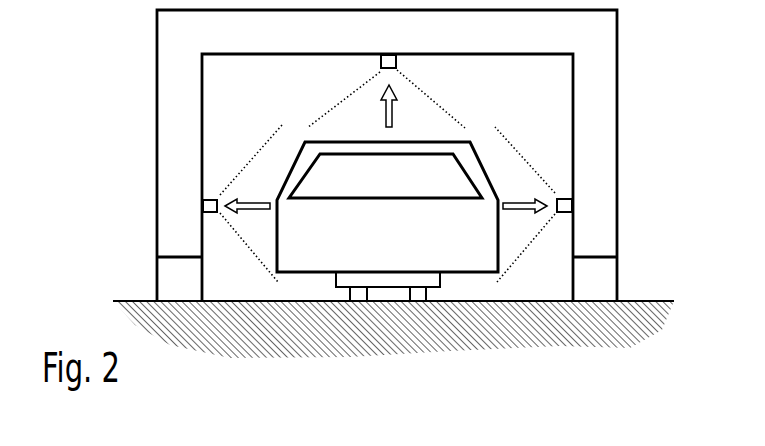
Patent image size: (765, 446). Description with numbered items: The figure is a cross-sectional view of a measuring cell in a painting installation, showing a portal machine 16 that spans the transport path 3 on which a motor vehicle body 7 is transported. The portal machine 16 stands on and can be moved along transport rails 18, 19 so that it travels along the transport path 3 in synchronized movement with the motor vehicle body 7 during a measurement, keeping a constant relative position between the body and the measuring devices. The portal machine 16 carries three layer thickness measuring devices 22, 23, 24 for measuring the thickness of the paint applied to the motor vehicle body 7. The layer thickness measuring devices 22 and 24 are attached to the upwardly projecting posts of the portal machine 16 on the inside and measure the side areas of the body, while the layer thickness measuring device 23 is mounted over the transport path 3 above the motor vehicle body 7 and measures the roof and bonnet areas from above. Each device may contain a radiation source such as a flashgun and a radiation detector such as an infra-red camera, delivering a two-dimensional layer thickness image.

The portal machine 16 is at (157, 67).
The transport rail 18 is at (157, 275).
The transport rail 19 is at (617, 280).
The motor vehicle body 7 is at (305, 142).
The transport path 3 is at (440, 276).
The layer thickness measuring device 22 is at (203, 205).
The layer thickness measuring device 23 is at (397, 62).
The layer thickness measuring device 24 is at (574, 205).